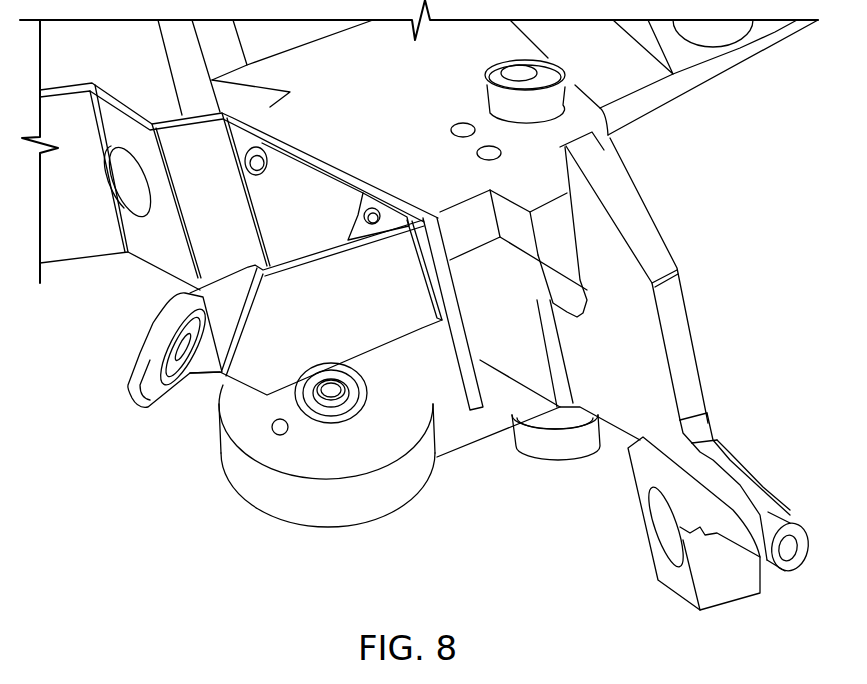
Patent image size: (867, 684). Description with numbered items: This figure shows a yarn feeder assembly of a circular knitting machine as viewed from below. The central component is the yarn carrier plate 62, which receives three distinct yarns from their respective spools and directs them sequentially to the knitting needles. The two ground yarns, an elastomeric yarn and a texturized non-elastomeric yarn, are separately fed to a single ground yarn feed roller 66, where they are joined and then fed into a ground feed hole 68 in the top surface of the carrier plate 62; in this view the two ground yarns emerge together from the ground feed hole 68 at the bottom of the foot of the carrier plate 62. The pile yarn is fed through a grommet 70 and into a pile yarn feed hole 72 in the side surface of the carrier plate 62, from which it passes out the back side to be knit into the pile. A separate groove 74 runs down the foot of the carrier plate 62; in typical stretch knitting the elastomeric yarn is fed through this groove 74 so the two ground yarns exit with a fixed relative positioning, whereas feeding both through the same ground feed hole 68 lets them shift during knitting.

The yarn carrier plate 62 is at (688, 367).
The ground yarn feed roller 66 is at (265, 485).
The ground feed hole 68 is at (788, 547).
The grommet 70 is at (140, 350).
The pile yarn feed hole 72 is at (663, 527).
The groove 74 is at (750, 507).